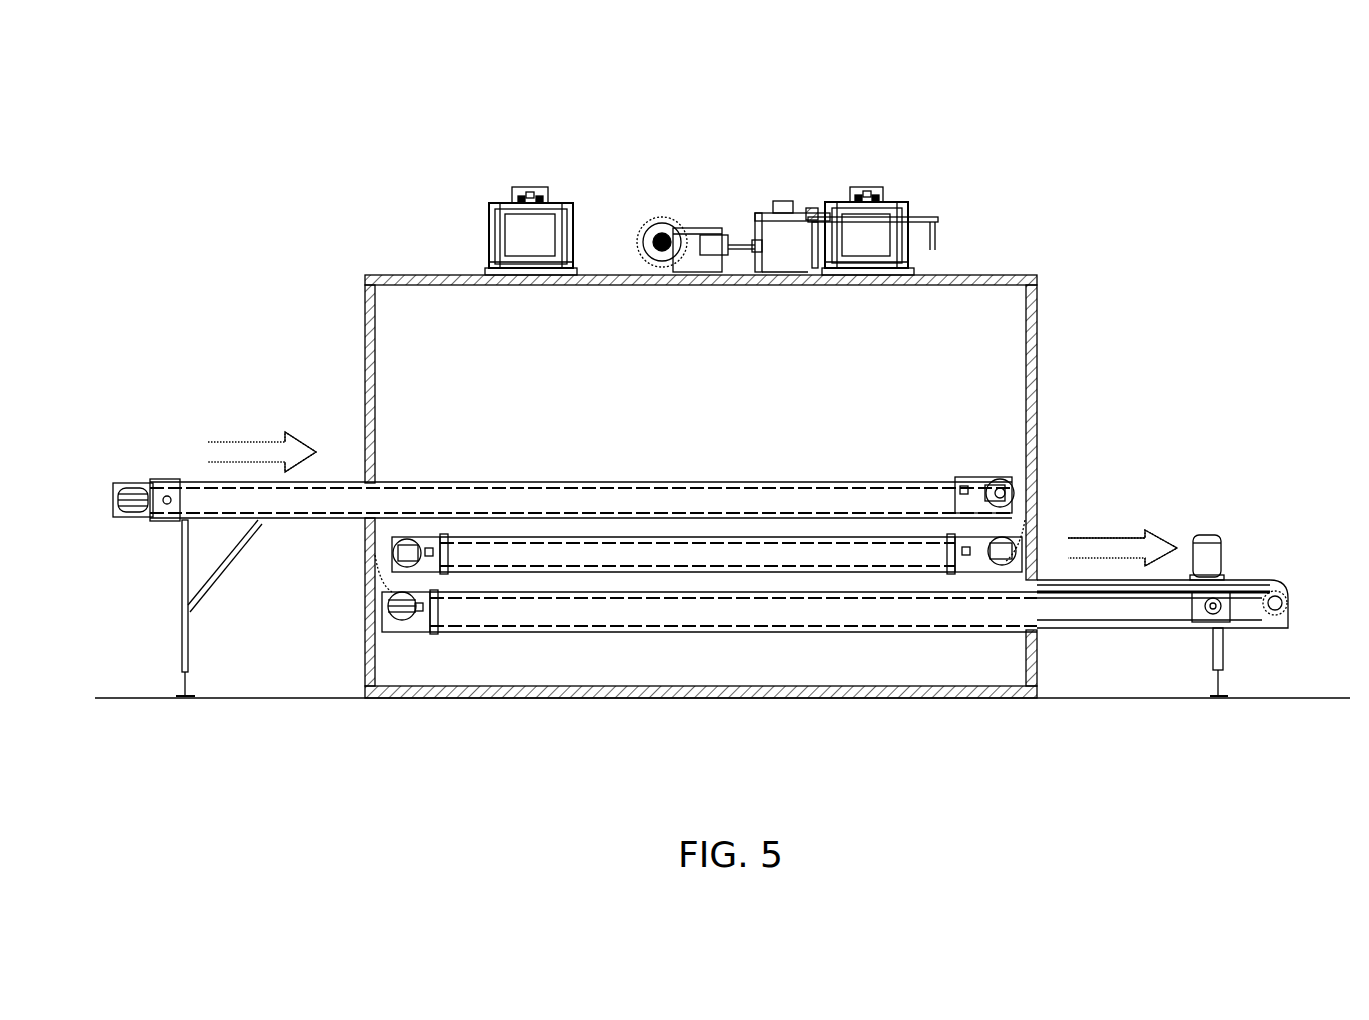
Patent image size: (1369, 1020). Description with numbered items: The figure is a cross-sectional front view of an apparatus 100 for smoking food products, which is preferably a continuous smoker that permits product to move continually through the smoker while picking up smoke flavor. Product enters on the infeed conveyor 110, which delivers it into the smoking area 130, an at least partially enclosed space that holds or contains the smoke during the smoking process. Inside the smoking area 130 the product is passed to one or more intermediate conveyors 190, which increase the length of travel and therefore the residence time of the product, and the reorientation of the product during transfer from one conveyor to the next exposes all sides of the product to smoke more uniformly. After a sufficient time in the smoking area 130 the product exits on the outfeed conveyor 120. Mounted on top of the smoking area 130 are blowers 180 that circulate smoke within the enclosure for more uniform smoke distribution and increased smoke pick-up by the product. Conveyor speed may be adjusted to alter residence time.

The apparatus 100 is at (1100, 196).
The infeed conveyor 110 is at (178, 470).
The outfeed conveyor 120 is at (1259, 572).
The smoking area 130 is at (1050, 405).
The blower 180 is at (490, 180).
The intermediate conveyor 190 is at (660, 535).